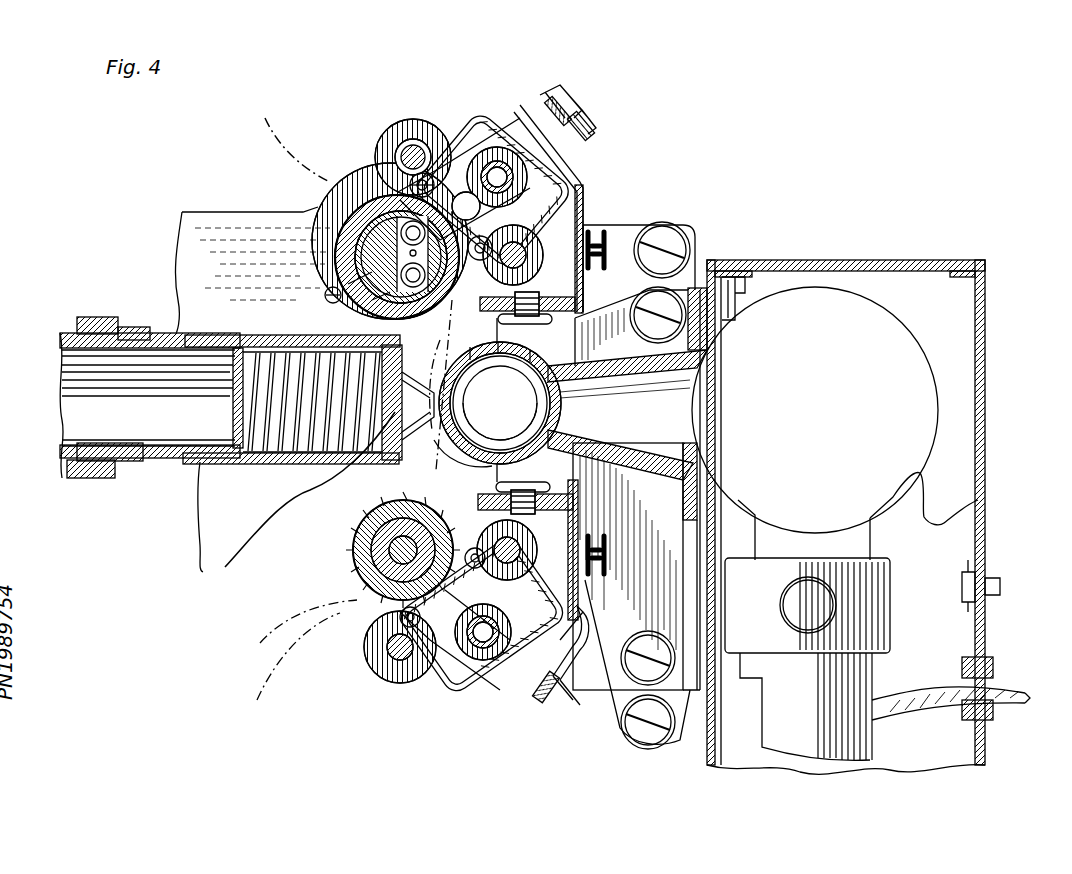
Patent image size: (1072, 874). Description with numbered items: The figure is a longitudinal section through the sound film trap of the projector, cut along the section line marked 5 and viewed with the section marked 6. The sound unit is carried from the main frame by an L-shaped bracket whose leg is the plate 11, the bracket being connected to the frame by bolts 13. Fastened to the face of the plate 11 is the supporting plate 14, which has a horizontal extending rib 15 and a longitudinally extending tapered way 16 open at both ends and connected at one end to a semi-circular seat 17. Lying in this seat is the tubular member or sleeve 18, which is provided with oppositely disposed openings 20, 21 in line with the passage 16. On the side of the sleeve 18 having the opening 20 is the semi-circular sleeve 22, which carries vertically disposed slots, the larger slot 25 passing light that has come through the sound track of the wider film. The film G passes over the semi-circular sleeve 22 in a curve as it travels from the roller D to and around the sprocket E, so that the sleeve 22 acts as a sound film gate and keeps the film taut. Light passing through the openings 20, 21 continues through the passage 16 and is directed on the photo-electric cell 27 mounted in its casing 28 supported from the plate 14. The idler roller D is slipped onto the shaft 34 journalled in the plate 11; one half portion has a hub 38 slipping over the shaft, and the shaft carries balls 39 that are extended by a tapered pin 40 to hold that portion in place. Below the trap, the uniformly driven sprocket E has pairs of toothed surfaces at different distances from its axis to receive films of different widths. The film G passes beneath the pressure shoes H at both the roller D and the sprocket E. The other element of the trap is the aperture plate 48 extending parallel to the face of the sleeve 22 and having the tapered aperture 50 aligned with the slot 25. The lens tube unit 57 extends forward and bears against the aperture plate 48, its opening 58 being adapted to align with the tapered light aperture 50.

The plate 11 is at (262, 216).
The bolts 13 is at (672, 246).
The supporting plate 14 is at (641, 457).
The horizontal extending rib 15 is at (650, 458).
The tapered way 16 is at (627, 415).
The semi-circular seat 17 is at (574, 320).
The tubular member or sleeve 18 is at (518, 446).
The opening 20 is at (458, 414).
The opening 21 is at (549, 407).
The semi-circular sleeve 22 is at (470, 458).
The slot 25 is at (442, 396).
The photo-electric cell 27 is at (861, 523).
The casing 28 is at (905, 271).
The shaft 34 is at (378, 244).
The hub 38 is at (348, 284).
The balls 39 is at (372, 300).
The tapered pin 40 is at (450, 254).
The plate 48 is at (470, 348).
The tapered aperture 50 is at (362, 452).
The lens tube unit 57 is at (230, 348).
The opening 58 is at (340, 462).
The upper sound film roller D is at (365, 262).
The sound film sprocket E is at (356, 555).
The film G is at (320, 172).
The pressure feet or shoes H is at (425, 176).
The section line 5 is at (40, 360).
The section line 6 is at (345, 80).